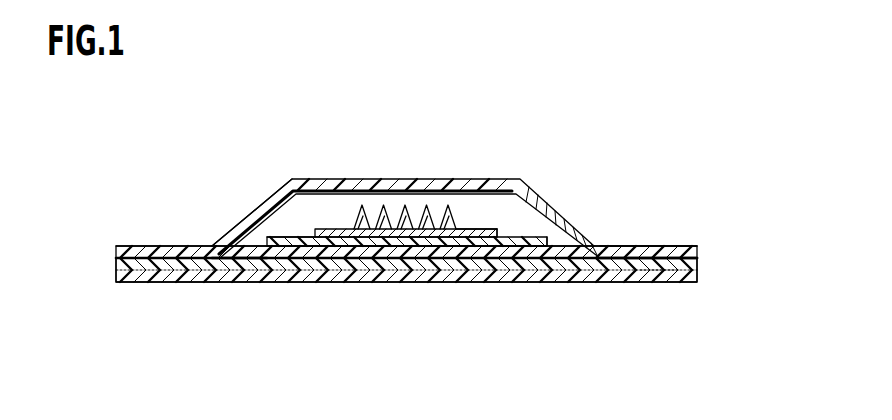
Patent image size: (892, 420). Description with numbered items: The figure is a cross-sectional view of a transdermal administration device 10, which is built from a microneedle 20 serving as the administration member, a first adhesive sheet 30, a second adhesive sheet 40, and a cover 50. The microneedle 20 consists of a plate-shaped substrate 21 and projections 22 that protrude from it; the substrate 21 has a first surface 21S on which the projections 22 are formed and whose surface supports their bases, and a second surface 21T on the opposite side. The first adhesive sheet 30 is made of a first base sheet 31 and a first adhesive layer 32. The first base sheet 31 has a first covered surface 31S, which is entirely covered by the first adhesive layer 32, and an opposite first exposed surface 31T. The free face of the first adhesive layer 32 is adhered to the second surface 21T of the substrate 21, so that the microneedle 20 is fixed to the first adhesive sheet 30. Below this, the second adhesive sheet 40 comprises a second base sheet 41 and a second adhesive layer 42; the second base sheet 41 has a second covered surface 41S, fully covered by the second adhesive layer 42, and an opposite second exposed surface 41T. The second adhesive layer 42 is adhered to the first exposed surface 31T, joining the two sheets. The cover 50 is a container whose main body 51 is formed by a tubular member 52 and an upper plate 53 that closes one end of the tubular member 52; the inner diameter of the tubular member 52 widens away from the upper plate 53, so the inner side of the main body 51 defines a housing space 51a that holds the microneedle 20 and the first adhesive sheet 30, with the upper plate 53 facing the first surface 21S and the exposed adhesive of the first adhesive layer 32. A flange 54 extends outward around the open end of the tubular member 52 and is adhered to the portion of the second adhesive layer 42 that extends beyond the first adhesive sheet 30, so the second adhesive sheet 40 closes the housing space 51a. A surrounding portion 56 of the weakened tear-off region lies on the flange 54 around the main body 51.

The transdermal administration device 10 is at (164, 184).
The microneedle 20 is at (392, 138).
The substrate 21 is at (316, 228).
The second surface 21T is at (455, 238).
The first surface 21S is at (498, 232).
The projection 22 is at (372, 205).
The first adhesive sheet 30 is at (280, 330).
The first base sheet 31 is at (266, 243).
The first exposed surface 31T is at (338, 238).
The first covered surface 31S is at (398, 246).
The first adhesive layer 32 is at (233, 262).
The second adhesive sheet 40 is at (752, 244).
The second base sheet 41 is at (699, 276).
The second exposed surface 41T is at (599, 262).
The second covered surface 41S is at (660, 268).
The second adhesive layer 42 is at (698, 259).
The cover 50 is at (618, 161).
The main body 51 is at (572, 125).
The housing space 51a is at (262, 234).
The tubular member 52 is at (546, 203).
The upper plate 53 is at (507, 180).
The flange 54 is at (680, 247).
The surrounding portion 56 is at (642, 256).